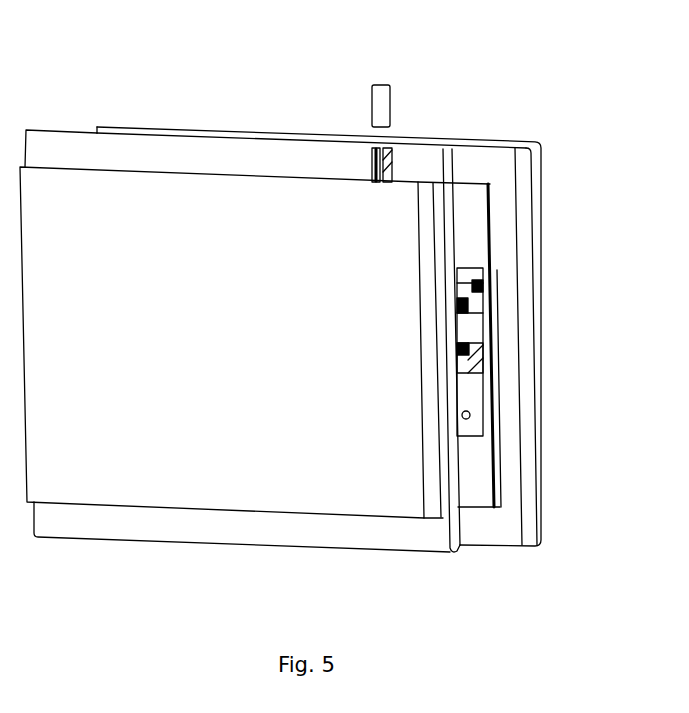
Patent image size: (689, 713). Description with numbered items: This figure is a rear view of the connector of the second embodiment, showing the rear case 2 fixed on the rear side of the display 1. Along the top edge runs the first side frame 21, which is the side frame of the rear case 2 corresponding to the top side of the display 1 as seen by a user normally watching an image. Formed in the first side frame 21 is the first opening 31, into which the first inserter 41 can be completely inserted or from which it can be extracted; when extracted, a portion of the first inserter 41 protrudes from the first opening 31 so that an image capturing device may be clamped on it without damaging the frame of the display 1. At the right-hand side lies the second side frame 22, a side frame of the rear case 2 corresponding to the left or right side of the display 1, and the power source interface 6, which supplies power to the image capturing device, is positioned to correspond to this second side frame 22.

The display 1 is at (533, 163).
The rear case 2 is at (110, 195).
The first side frame 21 is at (233, 153).
The second side frame 22 is at (435, 488).
The first opening 31 is at (387, 157).
The first inserter 41 is at (383, 107).
The power source interface 6 is at (433, 293).